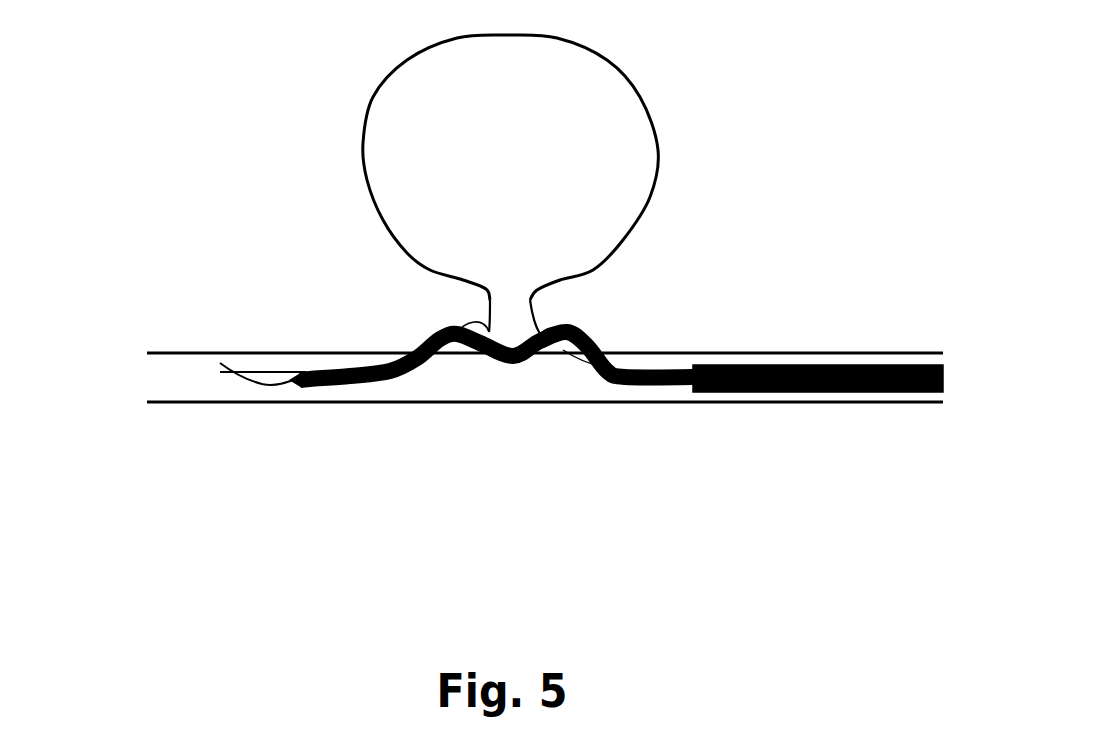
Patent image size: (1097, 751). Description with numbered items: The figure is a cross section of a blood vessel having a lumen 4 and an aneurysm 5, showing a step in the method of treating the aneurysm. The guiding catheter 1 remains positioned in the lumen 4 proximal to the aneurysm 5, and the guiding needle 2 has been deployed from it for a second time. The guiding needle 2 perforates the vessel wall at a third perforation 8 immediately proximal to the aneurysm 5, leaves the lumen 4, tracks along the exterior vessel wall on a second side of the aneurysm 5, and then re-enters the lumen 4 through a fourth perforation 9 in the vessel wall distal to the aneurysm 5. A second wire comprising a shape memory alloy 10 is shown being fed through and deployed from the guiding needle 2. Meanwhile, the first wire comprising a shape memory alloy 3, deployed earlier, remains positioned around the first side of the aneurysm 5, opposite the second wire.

The guiding catheter 1 is at (757, 365).
The guiding needle 2 is at (657, 367).
The first wire comprising a shape memory alloy 3 is at (266, 372).
The lumen 4 is at (155, 377).
The aneurysm 5 is at (640, 188).
The third perforation 8 is at (608, 350).
The fourth perforation 9 is at (417, 350).
The second wire comprising a shape memory alloy 10 is at (266, 372).